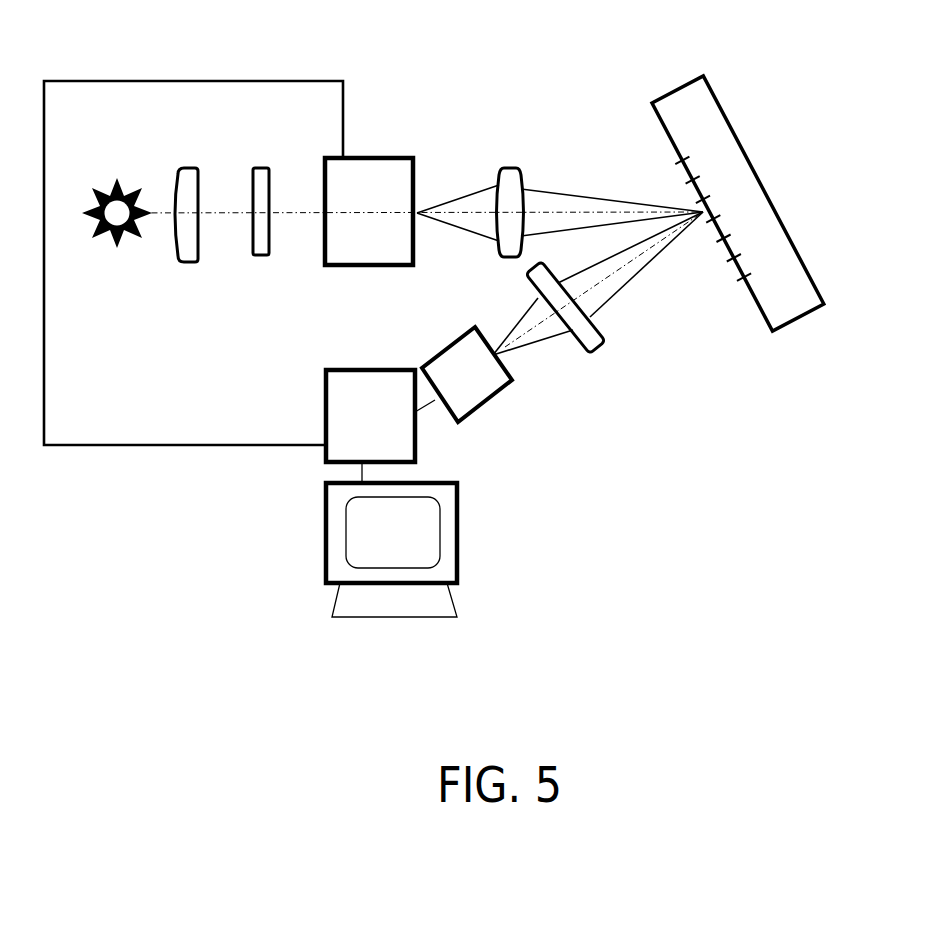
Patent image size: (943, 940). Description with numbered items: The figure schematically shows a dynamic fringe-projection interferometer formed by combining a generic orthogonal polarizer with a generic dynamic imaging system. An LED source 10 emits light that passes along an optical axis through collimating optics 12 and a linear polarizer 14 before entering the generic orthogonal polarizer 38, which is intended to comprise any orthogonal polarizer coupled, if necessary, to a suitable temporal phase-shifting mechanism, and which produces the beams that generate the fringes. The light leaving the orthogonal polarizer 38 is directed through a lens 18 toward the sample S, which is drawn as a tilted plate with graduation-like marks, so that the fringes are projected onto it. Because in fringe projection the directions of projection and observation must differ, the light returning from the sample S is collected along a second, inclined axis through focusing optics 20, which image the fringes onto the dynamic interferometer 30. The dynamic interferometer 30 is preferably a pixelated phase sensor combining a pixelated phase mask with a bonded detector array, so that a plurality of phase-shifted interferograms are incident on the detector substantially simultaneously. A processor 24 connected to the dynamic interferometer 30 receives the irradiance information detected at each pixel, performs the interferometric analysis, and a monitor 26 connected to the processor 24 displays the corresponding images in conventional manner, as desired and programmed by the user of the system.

The LED source 10 is at (112, 178).
The collimating optics 12 is at (182, 263).
The linear polarizer 14 is at (268, 168).
The generic orthogonal polarizer 38 is at (388, 158).
The focusing lens 18 is at (510, 167).
The sample S is at (713, 95).
The focusing optics 20 is at (590, 352).
The dynamic interferometer 30 is at (485, 403).
The processor 24 is at (325, 380).
The monitor 26 is at (325, 548).